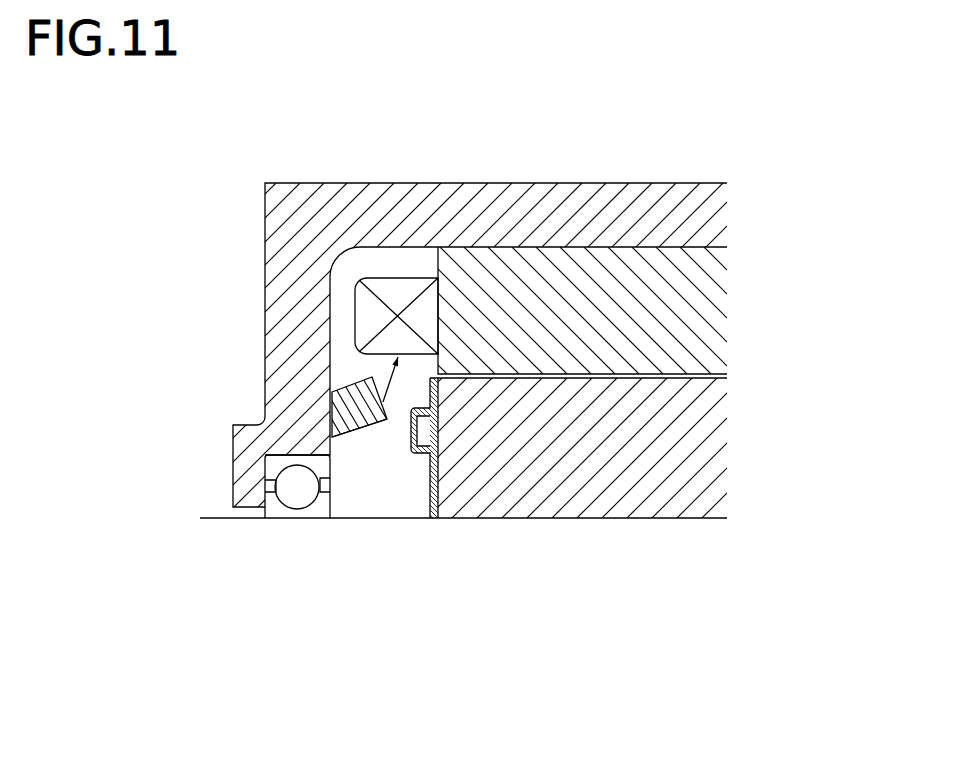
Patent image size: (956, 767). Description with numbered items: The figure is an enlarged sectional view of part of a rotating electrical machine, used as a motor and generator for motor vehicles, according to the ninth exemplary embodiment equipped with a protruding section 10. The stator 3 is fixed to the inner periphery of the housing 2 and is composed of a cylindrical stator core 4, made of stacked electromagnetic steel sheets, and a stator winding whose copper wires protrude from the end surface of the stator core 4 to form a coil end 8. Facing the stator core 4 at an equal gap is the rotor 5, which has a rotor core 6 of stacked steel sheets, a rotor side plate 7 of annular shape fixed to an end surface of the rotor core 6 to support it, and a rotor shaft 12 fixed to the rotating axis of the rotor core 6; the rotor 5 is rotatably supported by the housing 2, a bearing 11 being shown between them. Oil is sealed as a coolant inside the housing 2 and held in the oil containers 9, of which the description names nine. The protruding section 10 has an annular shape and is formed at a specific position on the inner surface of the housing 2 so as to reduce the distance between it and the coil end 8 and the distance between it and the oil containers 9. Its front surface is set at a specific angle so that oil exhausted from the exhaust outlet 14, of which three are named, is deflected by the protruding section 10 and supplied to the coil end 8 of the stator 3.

The housing 2 is at (657, 195).
The stator 3 is at (575, 204).
The stator core 4 is at (550, 272).
The rotor 5 is at (555, 533).
The rotor core 6 is at (523, 507).
The rotor side plate 7 is at (433, 497).
The coil end 8 is at (394, 292).
The oil container 9 is at (383, 402).
The protruding section 10 is at (362, 432).
The bearing 11 is at (277, 512).
The rotor shaft 12 is at (621, 576).
The exhaust outlet 14 is at (382, 432).